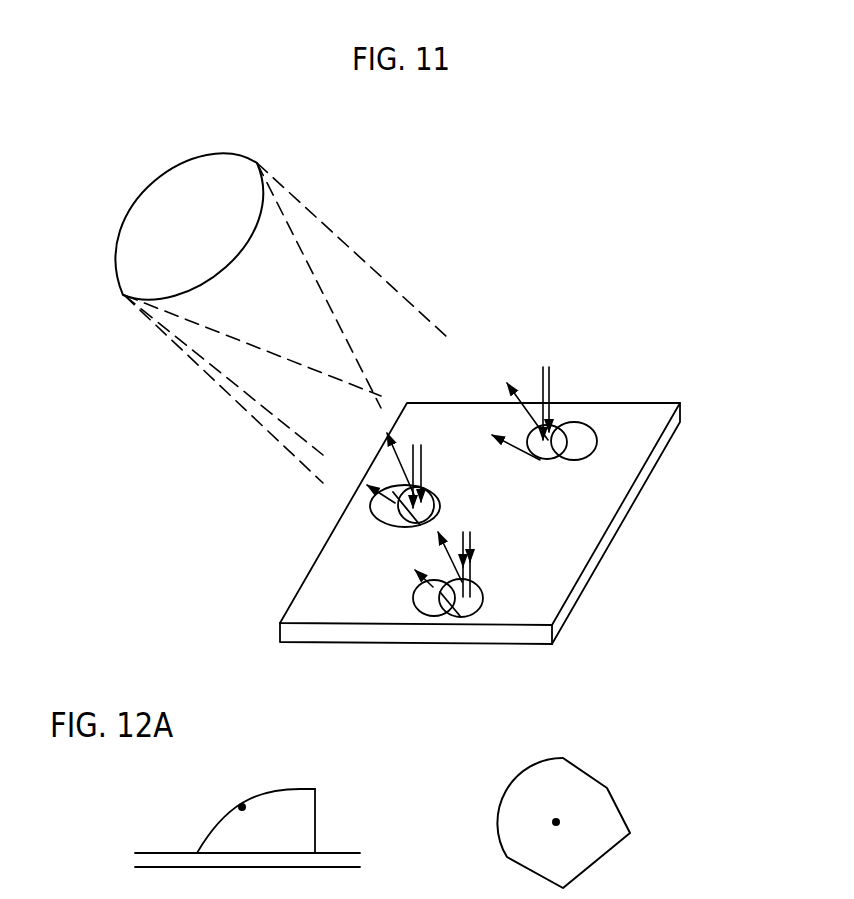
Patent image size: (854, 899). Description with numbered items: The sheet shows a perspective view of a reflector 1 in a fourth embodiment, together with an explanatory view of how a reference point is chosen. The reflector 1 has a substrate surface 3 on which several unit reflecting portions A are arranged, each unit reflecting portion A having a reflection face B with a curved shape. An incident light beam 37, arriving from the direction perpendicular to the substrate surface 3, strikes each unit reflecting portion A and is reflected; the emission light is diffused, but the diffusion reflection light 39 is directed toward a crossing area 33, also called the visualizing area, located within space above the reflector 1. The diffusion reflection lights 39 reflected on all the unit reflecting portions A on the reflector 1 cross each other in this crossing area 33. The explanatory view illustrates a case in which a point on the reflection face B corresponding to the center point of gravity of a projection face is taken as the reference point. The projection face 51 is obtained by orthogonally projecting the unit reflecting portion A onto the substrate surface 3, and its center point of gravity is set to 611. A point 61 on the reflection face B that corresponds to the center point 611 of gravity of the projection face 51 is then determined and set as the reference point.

In FIG. 11, the optical recording medium / substrate assembly 1 is at (605, 392).
In FIG. 11, the substrate surface 3 is at (592, 513).
In FIG. 12A, the substrate surface 3 is at (342, 853).
In FIG. 11, the crossing area 33 is at (197, 161).
In FIG. 11, the incident light beam 37 is at (418, 459).
In FIG. 11, the diffusion reflection light 39 is at (398, 442).
In FIG. 11, the unit reflecting portion A is at (430, 497).
In FIG. 12A, the unit reflecting portion A is at (284, 840).
In FIG. 12A, the reflection face B is at (283, 789).
In FIG. 12A, the projection face 51 is at (568, 762).
In FIG. 12A, the reference point 61 is at (242, 807).
In FIG. 12A, the center point of gravity of the projection face 611 is at (556, 822).